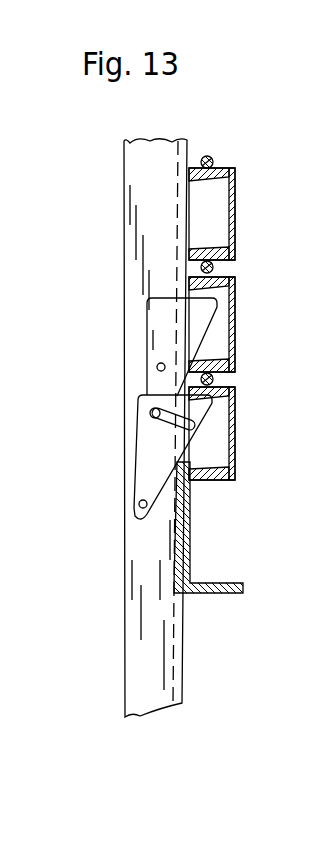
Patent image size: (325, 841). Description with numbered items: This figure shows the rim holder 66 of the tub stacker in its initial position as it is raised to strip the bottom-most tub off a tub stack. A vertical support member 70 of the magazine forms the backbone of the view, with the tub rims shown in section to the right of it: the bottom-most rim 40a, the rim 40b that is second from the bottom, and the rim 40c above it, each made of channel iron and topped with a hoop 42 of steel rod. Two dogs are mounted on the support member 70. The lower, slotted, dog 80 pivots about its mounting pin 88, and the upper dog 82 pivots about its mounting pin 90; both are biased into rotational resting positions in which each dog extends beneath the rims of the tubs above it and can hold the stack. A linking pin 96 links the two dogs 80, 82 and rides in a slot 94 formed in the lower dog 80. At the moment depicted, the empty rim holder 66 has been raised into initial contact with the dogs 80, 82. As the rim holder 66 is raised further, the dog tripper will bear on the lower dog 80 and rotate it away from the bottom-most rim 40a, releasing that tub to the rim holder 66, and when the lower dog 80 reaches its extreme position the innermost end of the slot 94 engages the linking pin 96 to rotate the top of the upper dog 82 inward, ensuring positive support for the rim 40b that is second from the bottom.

The vertical support member 70 is at (140, 653).
The bottom-most rim 40a is at (237, 440).
The rim of the second lowest tub 40b is at (237, 322).
The rim 40c is at (237, 215).
The hoop 42 is at (213, 158).
The upper dog 82 is at (150, 318).
The mounting pin 90 is at (157, 365).
The lower slotted dog 80 is at (148, 465).
The linking pin 96 is at (152, 409).
The slot 94 is at (150, 414).
The mounting pin 88 is at (139, 505).
The rim holder 66 is at (205, 596).